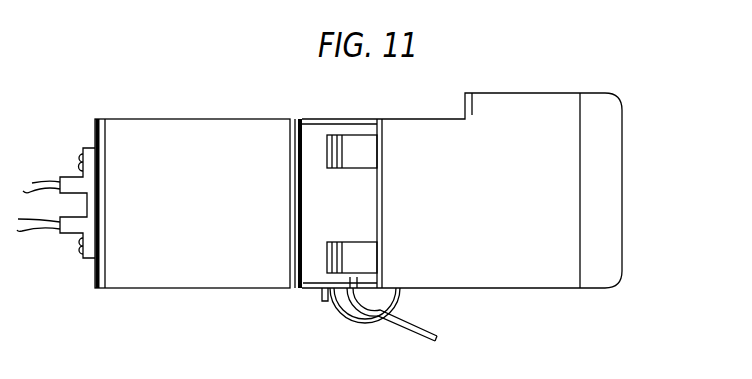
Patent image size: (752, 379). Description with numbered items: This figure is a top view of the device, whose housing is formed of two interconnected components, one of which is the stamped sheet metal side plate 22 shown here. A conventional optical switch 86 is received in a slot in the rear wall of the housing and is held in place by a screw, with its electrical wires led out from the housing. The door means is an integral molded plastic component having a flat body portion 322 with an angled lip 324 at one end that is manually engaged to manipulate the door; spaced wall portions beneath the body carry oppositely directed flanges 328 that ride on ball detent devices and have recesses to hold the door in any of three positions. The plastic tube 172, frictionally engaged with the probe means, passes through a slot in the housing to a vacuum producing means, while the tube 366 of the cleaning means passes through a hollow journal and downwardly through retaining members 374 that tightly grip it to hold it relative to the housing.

The stamped sheet metal side plate 22 is at (216, 214).
The optical switch 86 is at (62, 143).
The plastic tube 172 is at (420, 332).
The flat body portion 322 is at (528, 202).
The angled lip 324 is at (606, 162).
The flanges 328 is at (358, 143).
The tube 366 is at (370, 325).
The retaining members 374 is at (320, 305).